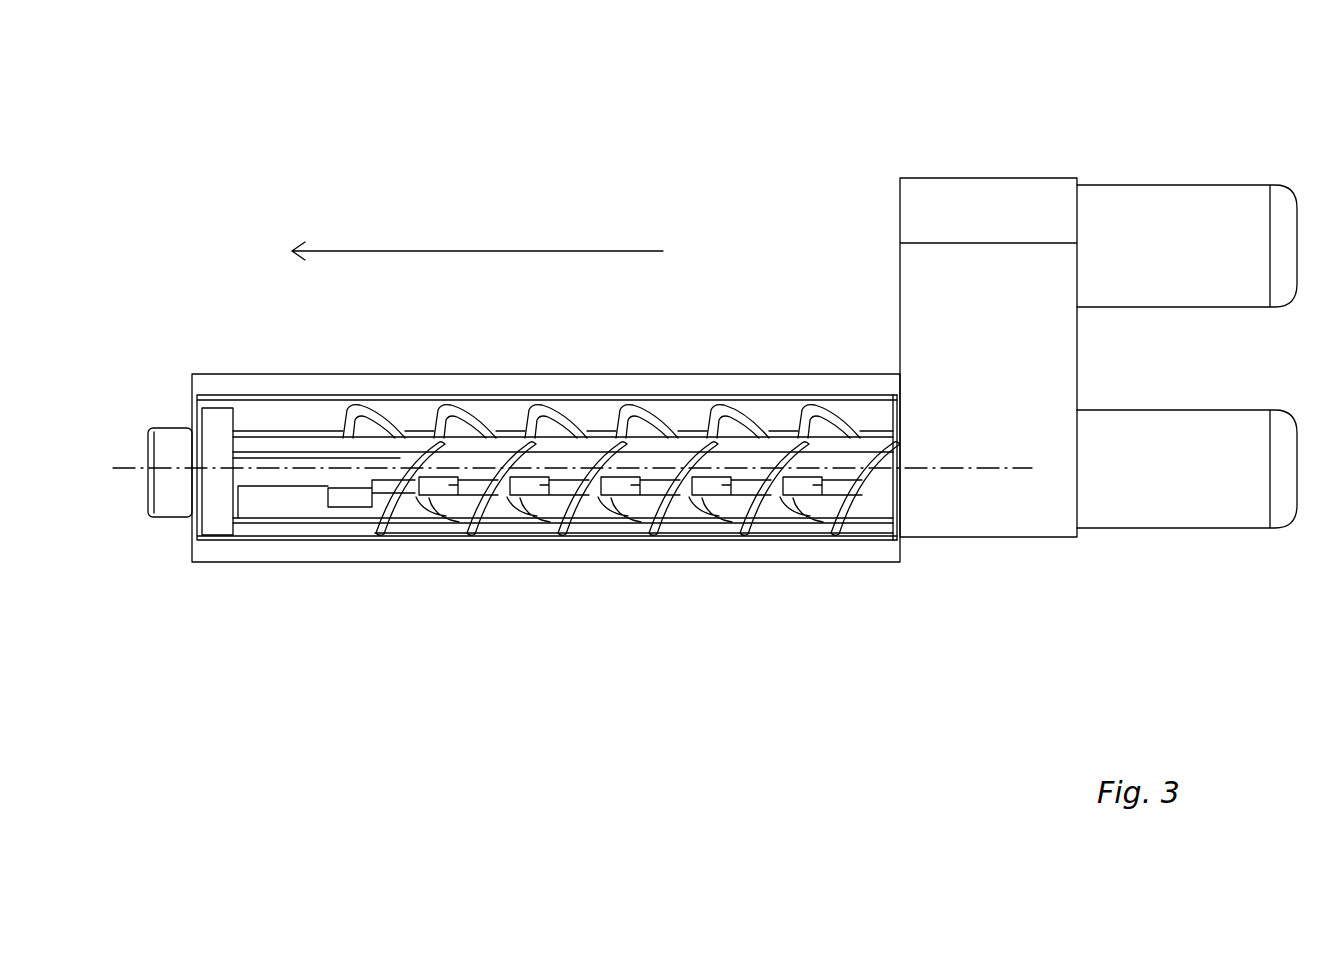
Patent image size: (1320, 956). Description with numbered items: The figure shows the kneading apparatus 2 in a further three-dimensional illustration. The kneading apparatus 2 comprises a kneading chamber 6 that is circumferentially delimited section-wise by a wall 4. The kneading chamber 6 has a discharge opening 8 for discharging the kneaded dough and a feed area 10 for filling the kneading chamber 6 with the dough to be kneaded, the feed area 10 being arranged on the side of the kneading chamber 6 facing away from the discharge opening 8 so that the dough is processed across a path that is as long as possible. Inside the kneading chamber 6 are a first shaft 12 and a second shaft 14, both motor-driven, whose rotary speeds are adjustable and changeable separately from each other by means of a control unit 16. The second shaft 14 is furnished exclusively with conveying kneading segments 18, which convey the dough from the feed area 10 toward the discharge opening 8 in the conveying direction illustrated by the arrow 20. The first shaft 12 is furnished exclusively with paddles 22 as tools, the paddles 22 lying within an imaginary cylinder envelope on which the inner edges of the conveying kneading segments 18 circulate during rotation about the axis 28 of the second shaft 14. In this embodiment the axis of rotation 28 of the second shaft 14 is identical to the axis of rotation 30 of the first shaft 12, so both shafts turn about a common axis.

The kneading apparatus 2 is at (1192, 124).
The wall 4 is at (287, 413).
The kneading chamber 6 is at (330, 428).
The discharge opening 8 is at (275, 506).
The feed area 10 is at (869, 409).
The first shaft 12 is at (320, 462).
The second shaft 14 is at (532, 530).
The control unit 16 is at (1062, 366).
The conveying kneading segments 18 is at (725, 403).
The arrow 20 is at (487, 251).
The paddles 22 is at (699, 501).
The axis of rotation of the second shaft 28 is at (113, 470).
The axis of rotation of the first shaft 30 is at (133, 507).